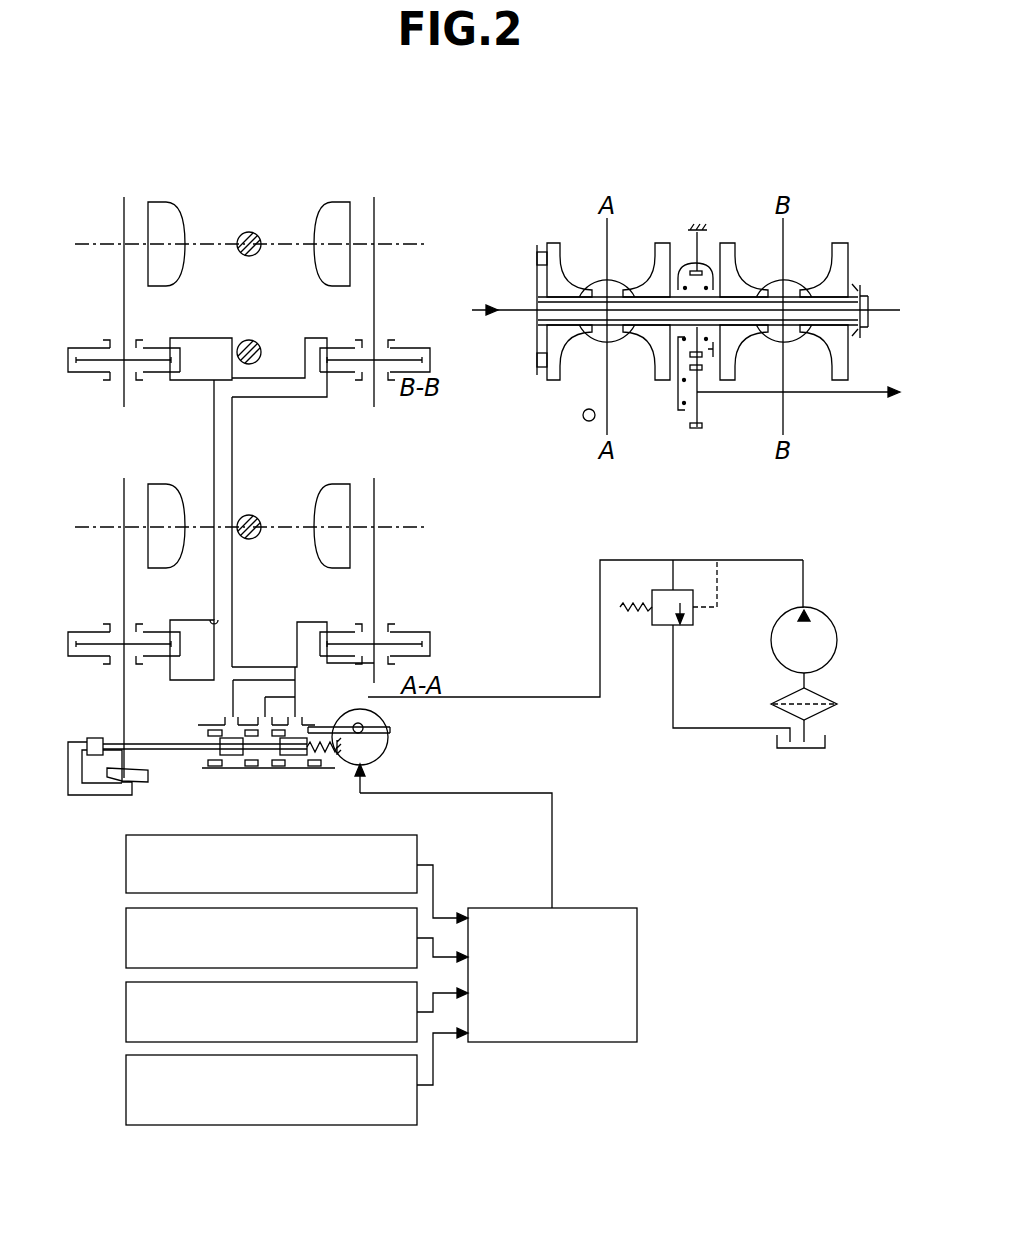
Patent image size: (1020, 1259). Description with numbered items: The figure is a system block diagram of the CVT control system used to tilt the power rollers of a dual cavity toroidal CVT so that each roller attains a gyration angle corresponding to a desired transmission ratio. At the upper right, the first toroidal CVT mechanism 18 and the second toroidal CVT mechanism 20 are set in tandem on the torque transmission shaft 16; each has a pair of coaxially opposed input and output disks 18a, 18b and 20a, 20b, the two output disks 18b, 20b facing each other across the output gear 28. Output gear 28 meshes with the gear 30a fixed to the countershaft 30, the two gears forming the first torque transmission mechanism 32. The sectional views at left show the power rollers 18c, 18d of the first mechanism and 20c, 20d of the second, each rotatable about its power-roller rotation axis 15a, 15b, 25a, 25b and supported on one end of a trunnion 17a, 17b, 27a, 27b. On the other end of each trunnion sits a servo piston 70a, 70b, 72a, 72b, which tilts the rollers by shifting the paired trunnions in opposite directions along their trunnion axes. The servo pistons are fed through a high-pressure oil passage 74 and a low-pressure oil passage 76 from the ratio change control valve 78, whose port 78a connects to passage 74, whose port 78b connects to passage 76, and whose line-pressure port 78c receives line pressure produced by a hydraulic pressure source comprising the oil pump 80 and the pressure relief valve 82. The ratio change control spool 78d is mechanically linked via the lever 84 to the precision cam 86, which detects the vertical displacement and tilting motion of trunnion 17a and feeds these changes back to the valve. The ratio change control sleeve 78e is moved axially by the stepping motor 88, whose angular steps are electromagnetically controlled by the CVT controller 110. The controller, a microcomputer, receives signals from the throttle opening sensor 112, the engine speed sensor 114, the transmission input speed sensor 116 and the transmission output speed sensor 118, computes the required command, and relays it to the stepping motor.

The power-roller rotation axis 15a is at (92, 525).
The power-roller rotation axis 15b is at (410, 525).
The torque-transmission shaft 16 is at (250, 233).
The trunnion 17a is at (123, 563).
The trunnion 17b is at (377, 558).
The first toroidal CVT mechanism 18 is at (593, 264).
The input disk 18a is at (552, 245).
The output disk 18b is at (662, 243).
The power roller 18c is at (162, 482).
The power roller 18d is at (335, 482).
The second toroidal CVT mechanism 20 is at (801, 257).
The input disk 20a is at (842, 243).
The output disk 20b is at (725, 243).
The power roller 20c is at (163, 202).
The power roller 20d is at (333, 202).
The power-roller rotation axis 25a is at (92, 243).
The power-roller rotation axis 25b is at (402, 242).
The trunnion 27a is at (123, 282).
The trunnion 27b is at (377, 280).
The output gear 28 is at (698, 265).
The countershaft 30 is at (250, 340).
The gear 30a is at (690, 428).
The first torque transmission mechanism 32 is at (730, 423).
The servo piston 70a is at (97, 628).
The servo piston 70b is at (415, 628).
The servo piston 72a is at (100, 347).
The servo piston 72b is at (398, 347).
The high-pressure oil passage 74 is at (233, 553).
The low-pressure oil passage 76 is at (168, 670).
The ratio change control valve 78 is at (234, 748).
The port 78a is at (232, 720).
The port 78b is at (300, 722).
The line-pressure port 78c is at (263, 718).
The ratio change control spool 78d is at (240, 753).
The ratio change control sleeve 78e is at (315, 767).
The oil pump 80 is at (825, 617).
The pressure relief valve 82 is at (680, 623).
The lever 84 is at (92, 795).
The precision cam 86 is at (150, 777).
The stepping motor 88 is at (388, 723).
The CVT controller 110 is at (610, 907).
The throttle opening sensor 112 is at (126, 862).
The engine speed sensor 114 is at (126, 938).
The transmission input speed sensor 116 is at (126, 1012).
The transmission output speed sensor 118 is at (126, 1088).